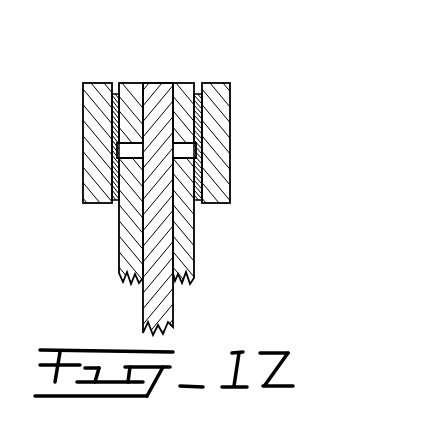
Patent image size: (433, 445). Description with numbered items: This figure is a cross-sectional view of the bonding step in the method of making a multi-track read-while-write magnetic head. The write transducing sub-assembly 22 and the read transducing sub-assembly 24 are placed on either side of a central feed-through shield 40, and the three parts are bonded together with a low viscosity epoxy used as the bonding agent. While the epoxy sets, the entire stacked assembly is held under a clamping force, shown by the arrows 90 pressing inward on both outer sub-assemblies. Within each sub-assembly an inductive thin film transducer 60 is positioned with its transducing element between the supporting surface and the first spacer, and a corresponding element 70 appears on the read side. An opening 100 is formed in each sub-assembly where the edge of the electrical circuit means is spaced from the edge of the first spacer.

The write transducing sub-assembly 22 is at (145, 65).
The read transducing sub-assembly 24 is at (233, 65).
The feed-through shield 40 is at (168, 315).
The inductive thin film transducer 60 is at (113, 147).
The groove 70 is at (186, 155).
The arrows 90 is at (62, 103).
The opening 100 is at (130, 152).